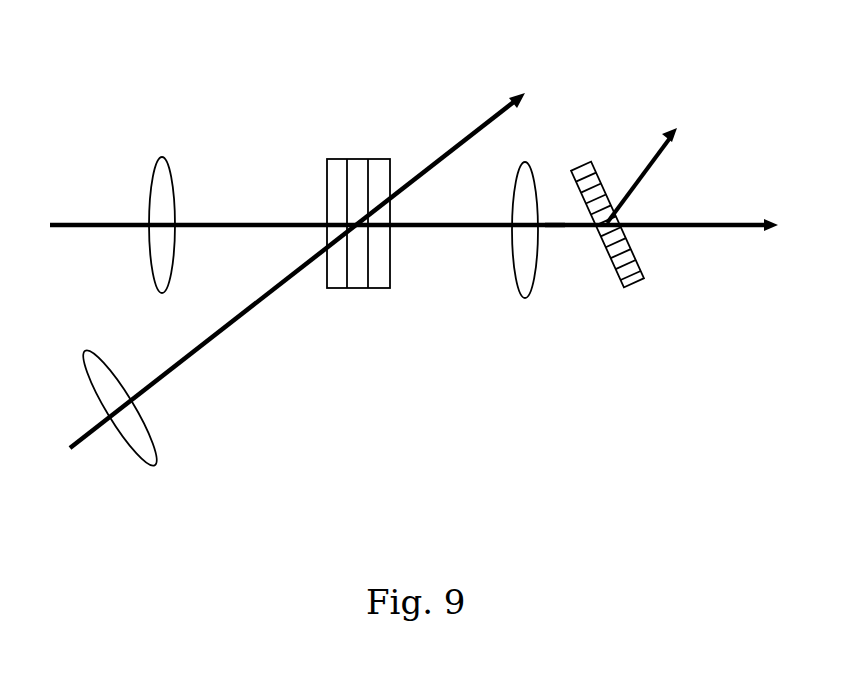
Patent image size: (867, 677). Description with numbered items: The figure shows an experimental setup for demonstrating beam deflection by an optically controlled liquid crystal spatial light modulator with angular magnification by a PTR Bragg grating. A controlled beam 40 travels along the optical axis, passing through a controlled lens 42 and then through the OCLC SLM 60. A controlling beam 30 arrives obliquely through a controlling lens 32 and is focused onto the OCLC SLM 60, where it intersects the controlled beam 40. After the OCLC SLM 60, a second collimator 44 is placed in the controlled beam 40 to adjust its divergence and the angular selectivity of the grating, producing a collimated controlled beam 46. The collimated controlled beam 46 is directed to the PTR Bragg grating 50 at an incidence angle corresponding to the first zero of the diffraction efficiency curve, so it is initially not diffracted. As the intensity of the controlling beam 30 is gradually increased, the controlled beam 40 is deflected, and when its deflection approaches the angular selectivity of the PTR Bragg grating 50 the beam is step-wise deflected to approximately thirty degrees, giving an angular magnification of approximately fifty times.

The controlling beam 30 is at (257, 327).
The controlling lens 32 is at (174, 462).
The controlled beam 40 is at (233, 212).
The controlled lens 42 is at (147, 159).
The collimator 44 is at (525, 319).
The collimated controlled beam 46 is at (555, 212).
The PTR Bragg grating 50 is at (625, 307).
The OCLC SLM 60 is at (358, 140).